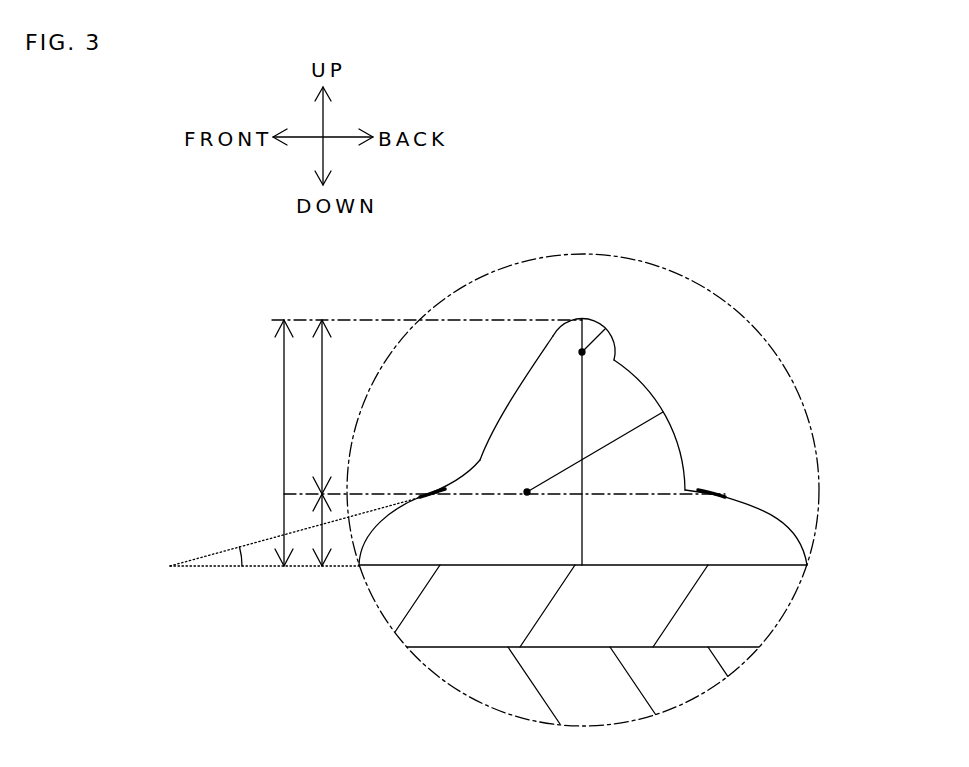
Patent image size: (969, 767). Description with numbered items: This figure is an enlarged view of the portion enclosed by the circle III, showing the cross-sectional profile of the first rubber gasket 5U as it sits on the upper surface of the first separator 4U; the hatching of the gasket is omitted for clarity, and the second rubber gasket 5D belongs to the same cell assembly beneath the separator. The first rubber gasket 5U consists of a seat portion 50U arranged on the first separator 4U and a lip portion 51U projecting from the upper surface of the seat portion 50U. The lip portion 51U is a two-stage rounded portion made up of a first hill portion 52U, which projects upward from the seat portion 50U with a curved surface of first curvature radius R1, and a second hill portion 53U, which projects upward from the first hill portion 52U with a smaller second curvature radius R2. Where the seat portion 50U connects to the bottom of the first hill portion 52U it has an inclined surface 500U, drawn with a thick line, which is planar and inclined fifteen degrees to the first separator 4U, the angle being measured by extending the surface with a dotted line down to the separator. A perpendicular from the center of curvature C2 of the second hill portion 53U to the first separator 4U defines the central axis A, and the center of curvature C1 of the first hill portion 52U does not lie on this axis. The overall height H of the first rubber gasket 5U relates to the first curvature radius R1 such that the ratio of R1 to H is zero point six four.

The circle III is at (672, 272).
The first rubber gasket 5U is at (583, 426).
The central axis A is at (608, 324).
The second hill portion 53U is at (605, 337).
The first hill portion 52U is at (652, 433).
The inclined surface 500U is at (430, 447).
The second curvature radius R2 is at (586, 319).
The first curvature radius R1 is at (600, 450).
The center of curvature of the second hill portion C2 is at (582, 352).
The center of curvature of the first hill portion C1 is at (527, 492).
The height of the first rubber gasket H is at (284, 447).
The lip portion 51U is at (322, 407).
The seat portion 50U is at (323, 532).
The first separator 4U is at (770, 600).
The second rubber gasket 5D is at (688, 683).